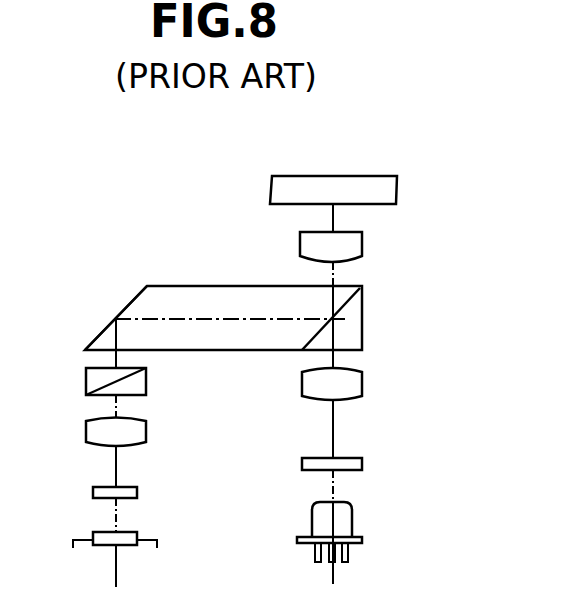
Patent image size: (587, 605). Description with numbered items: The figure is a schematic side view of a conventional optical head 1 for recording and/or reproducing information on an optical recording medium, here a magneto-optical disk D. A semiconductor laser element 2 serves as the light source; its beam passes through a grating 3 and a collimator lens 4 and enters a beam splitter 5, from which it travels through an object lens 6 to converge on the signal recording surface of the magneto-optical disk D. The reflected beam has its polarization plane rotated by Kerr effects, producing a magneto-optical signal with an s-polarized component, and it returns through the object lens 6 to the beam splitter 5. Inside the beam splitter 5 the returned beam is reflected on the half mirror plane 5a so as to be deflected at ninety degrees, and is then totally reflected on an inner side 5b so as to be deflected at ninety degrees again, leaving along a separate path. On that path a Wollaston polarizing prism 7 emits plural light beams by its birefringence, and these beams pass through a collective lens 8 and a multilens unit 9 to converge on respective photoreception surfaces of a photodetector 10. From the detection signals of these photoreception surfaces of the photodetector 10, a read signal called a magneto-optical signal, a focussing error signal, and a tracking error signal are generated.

The optical head 1 is at (447, 167).
The magneto-optical disk D is at (341, 176).
The object lens 6 is at (362, 243).
The beam splitter 5 is at (236, 309).
The half mirror plane 5a is at (352, 292).
The inner side 5b is at (139, 294).
The collimator lens 4 is at (362, 382).
The grating 3 is at (362, 465).
The semiconductor laser element 2 is at (352, 522).
The Wollaston polarizing prism 7 is at (86, 382).
The collective lens 8 is at (86, 430).
The multilens unit 9 is at (93, 493).
The photodetector 10 is at (100, 547).